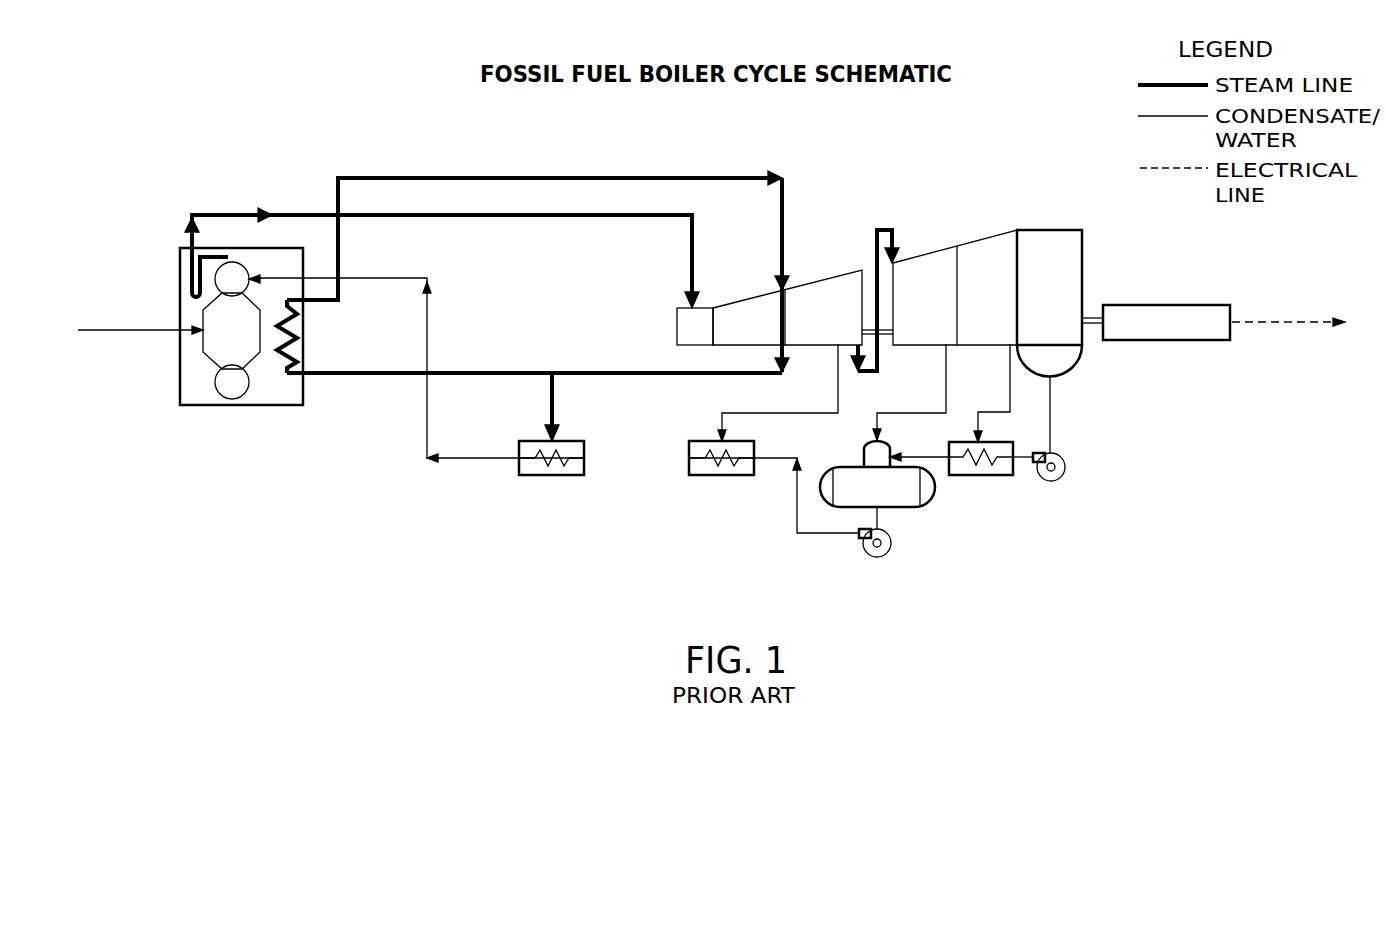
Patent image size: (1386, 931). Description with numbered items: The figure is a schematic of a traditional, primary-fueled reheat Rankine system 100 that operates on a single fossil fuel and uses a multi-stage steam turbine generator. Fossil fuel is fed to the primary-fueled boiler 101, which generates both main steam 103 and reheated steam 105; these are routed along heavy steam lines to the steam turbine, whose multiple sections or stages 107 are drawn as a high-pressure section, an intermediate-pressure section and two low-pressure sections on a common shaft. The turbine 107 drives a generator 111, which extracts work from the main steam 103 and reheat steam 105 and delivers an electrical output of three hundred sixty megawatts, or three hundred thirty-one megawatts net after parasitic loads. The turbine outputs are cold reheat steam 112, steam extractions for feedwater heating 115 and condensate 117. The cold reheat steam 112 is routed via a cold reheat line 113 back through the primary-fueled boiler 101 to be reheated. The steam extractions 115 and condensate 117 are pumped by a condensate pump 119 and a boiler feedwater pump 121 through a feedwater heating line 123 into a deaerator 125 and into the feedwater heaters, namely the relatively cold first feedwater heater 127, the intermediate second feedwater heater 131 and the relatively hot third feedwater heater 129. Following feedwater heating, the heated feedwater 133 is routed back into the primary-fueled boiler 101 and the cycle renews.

The primary-fueled Rankine system 100 is at (172, 146).
The primary-fueled boiler 101 is at (232, 406).
The main steam 103 is at (227, 185).
The reheated steam 105 is at (498, 152).
The steam turbine sections 107 is at (749, 303).
The generator 111 is at (1166, 305).
The cold reheat steam 112 is at (631, 372).
The cold reheat line 113 is at (535, 350).
The steam extractions for feedwater heating 115 is at (555, 397).
The condensate 117 is at (1052, 411).
The condensate pump 119 is at (1052, 482).
The boiler feedwater pump 121 is at (877, 558).
The feedwater heating line 123 is at (814, 540).
The deaerator 125 is at (848, 466).
The first feedwater heater 127 is at (985, 443).
The third feedwater heater 129 is at (562, 441).
The second feedwater heater 131 is at (732, 441).
The heated feedwater 133 is at (430, 318).